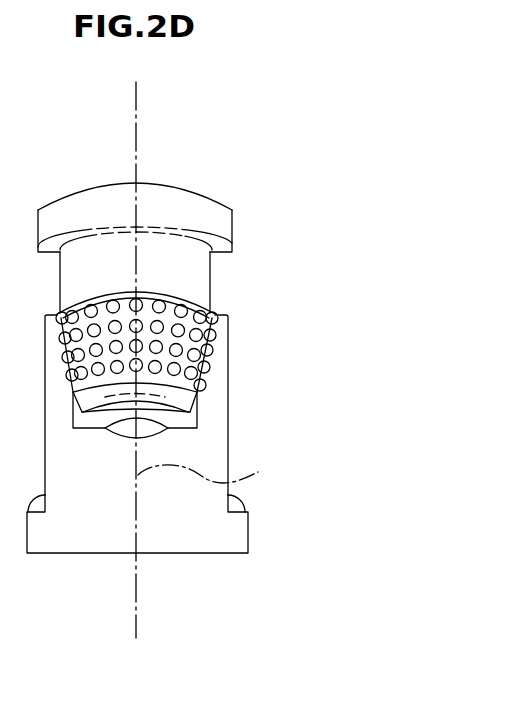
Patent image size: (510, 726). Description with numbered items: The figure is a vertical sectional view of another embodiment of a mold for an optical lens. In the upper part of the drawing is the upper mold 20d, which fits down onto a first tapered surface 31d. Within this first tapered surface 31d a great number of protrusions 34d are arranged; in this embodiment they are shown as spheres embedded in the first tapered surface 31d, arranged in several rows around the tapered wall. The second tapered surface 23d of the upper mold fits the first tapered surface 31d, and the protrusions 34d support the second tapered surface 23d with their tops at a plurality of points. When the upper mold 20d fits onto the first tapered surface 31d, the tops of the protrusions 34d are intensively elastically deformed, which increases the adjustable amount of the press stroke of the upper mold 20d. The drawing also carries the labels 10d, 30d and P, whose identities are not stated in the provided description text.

The base member 10d is at (202, 547).
The upper mold 20d is at (163, 186).
The filter body 30d is at (232, 349).
The first tapered surface 31d is at (180, 295).
The protrusions 34d is at (217, 336).
The second tapered surface 23d is at (180, 398).
The liquid level P is at (210, 470).